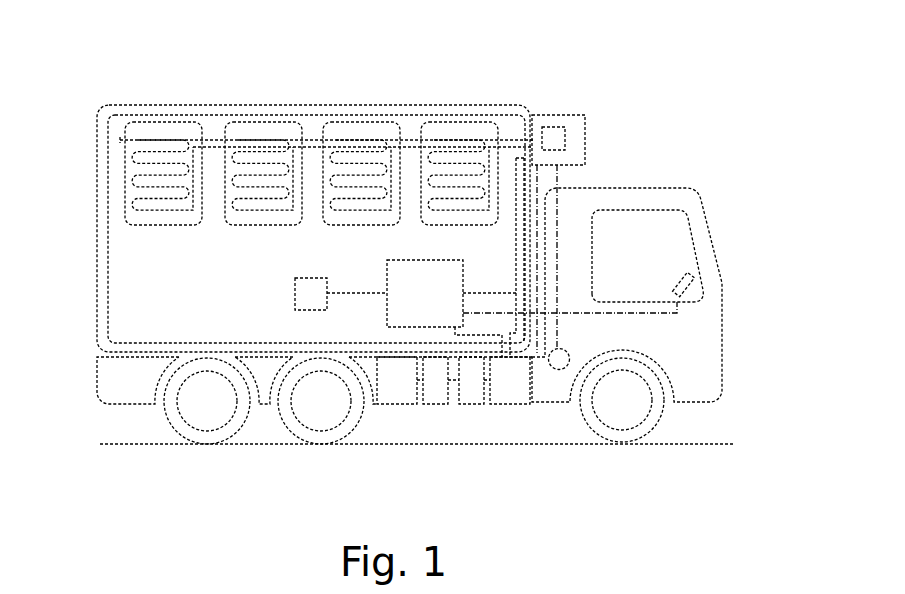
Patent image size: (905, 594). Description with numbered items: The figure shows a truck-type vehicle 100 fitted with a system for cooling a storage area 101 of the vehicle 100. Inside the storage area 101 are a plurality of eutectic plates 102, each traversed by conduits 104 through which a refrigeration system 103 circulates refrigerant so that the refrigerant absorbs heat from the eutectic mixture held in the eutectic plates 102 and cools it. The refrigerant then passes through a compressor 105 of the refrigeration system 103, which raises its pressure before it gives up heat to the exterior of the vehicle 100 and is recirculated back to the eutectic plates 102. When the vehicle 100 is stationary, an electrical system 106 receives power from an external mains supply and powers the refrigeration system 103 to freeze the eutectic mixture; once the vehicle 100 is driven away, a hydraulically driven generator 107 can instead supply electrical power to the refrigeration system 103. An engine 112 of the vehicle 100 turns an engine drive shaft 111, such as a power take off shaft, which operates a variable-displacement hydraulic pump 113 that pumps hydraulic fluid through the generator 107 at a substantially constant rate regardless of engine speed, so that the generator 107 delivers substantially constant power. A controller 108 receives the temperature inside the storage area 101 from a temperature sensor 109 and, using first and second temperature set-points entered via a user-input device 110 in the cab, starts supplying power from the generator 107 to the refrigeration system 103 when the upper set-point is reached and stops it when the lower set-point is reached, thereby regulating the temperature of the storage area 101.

The vehicle 100 is at (747, 77).
The storage area 101 is at (128, 297).
The eutectic plates 102 is at (145, 132).
The refrigeration system 103 is at (580, 141).
The conduits 104 is at (410, 140).
The compressor 105 is at (551, 134).
The electrical system 106 is at (571, 370).
The generator 107 is at (519, 392).
The controller 108 is at (404, 261).
The temperature sensor 109 is at (300, 279).
The user-input device 110 is at (702, 266).
The engine drive shaft 111 is at (435, 404).
The engine 112 is at (397, 404).
The hydraulic pump 113 is at (468, 404).